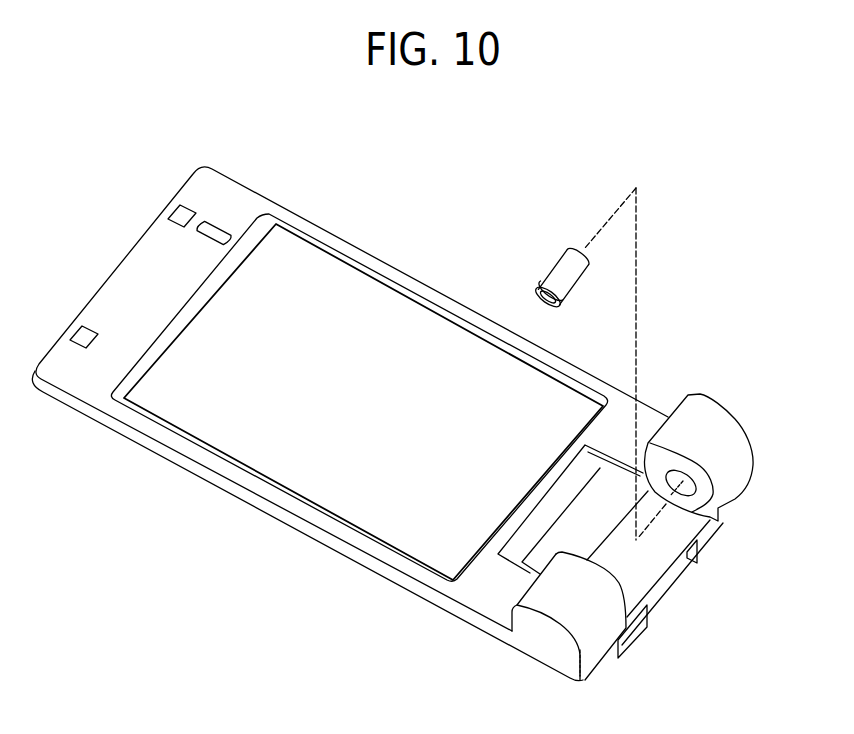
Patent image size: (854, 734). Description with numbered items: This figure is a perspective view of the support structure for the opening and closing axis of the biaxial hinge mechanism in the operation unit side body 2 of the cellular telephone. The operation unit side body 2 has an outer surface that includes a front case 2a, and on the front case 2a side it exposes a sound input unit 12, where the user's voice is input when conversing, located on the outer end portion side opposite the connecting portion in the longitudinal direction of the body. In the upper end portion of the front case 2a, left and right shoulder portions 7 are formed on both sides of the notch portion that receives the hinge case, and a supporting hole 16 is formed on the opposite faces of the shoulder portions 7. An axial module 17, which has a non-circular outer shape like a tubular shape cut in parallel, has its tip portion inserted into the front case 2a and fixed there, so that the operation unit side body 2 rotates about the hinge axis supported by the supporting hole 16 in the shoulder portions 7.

The operation unit side body 2 is at (339, 209).
The front case 2a is at (396, 275).
The shoulder portions 7 is at (717, 439).
The sound input unit 12 is at (220, 228).
The supporting hole 16 is at (696, 506).
The axial module 17 is at (558, 273).